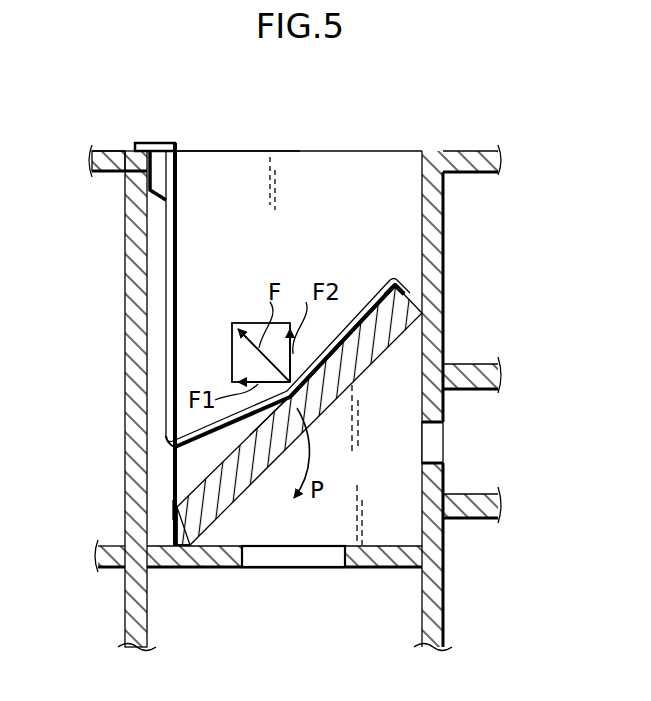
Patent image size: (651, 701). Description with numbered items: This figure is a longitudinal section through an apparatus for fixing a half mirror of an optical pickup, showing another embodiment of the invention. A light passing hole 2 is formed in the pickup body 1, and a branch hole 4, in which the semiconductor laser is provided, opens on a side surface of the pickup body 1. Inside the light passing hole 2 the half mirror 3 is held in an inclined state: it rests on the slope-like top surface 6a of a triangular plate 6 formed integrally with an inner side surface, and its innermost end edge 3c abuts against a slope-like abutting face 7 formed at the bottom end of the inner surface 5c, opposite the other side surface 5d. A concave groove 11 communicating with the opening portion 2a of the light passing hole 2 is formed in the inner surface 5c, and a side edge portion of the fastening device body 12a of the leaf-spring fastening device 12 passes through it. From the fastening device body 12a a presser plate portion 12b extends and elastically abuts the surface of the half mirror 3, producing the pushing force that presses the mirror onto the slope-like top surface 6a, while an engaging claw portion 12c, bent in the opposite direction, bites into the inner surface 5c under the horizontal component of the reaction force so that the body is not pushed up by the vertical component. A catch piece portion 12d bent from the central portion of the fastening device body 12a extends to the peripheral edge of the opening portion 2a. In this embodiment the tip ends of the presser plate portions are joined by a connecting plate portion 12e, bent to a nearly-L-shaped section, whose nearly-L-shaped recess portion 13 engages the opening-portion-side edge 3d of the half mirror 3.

The pickup body 1 is at (90, 162).
The light passing hole 2 is at (357, 178).
The opening portion 2a is at (296, 150).
The half mirror 3 is at (340, 384).
The innermost end edge 3c is at (176, 549).
The opening-portion-side edge 3d is at (413, 299).
The branch hole 4 is at (463, 443).
The inner surface 5c is at (146, 278).
The other side surface 5d is at (424, 207).
The triangular plate 6 is at (380, 518).
The slope-like top surface 6a is at (272, 461).
The slope-like abutting face 7 is at (160, 511).
The concave groove 11 is at (172, 483).
The fastening device 12 is at (190, 282).
The fastening device body 12a is at (180, 228).
The presser plate portion 12b is at (168, 463).
The engaging claw portion 12c is at (148, 181).
The catch piece portion 12d is at (152, 142).
The connecting plate portion 12e is at (406, 288).
The nearly-L-shaped recess portion 13 is at (391, 282).